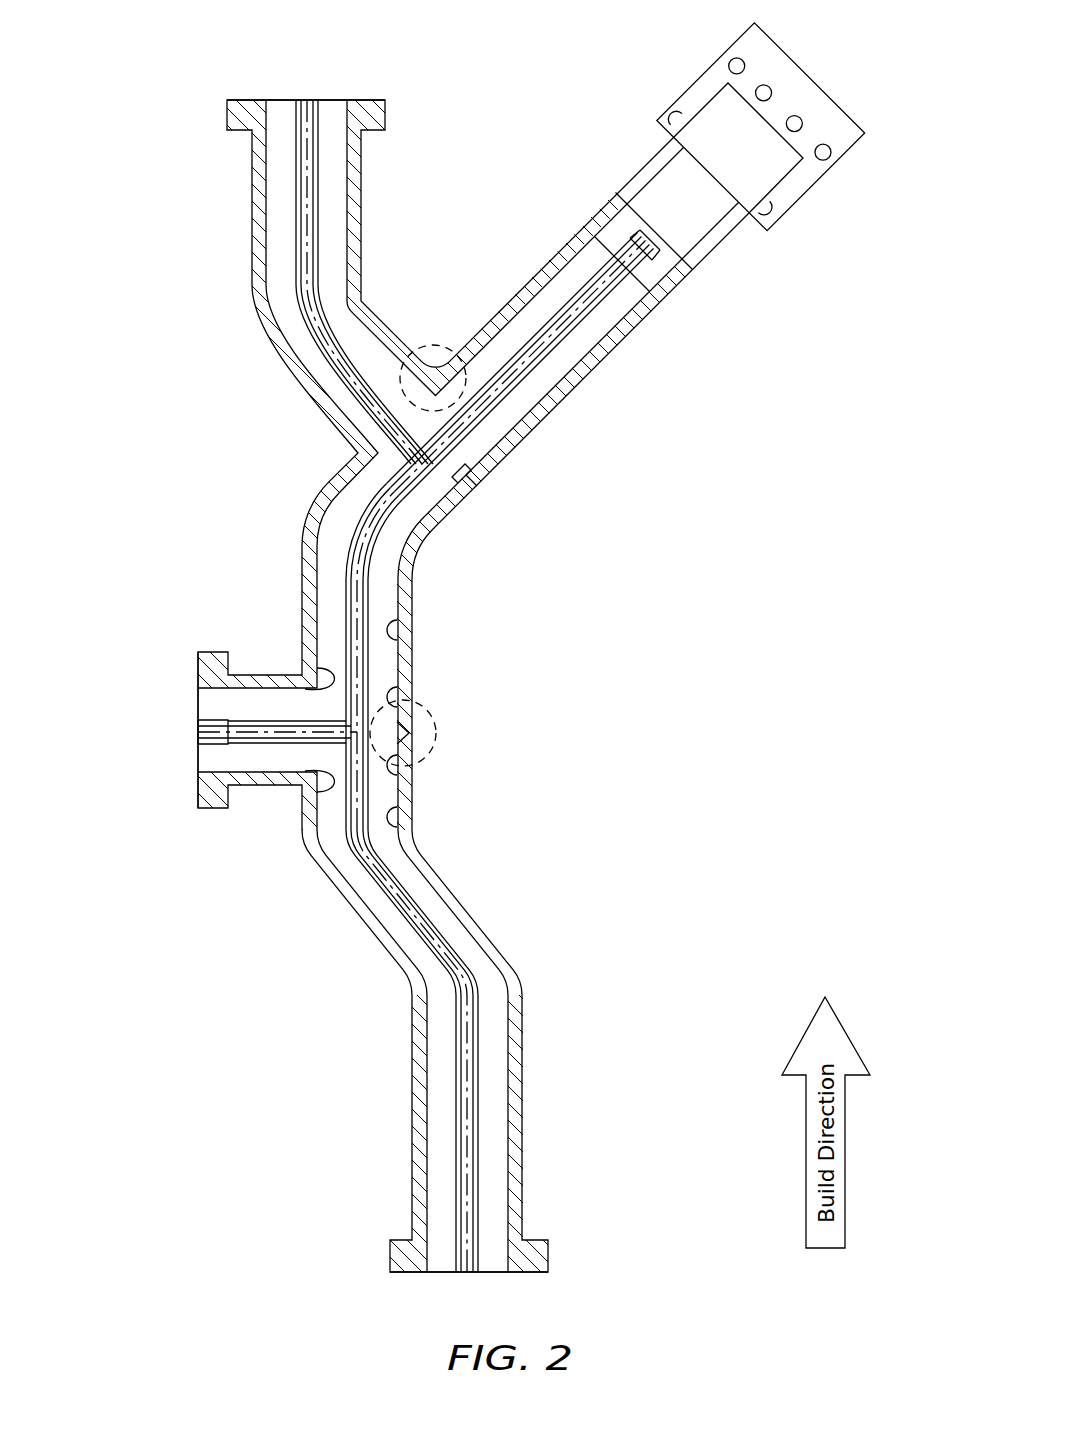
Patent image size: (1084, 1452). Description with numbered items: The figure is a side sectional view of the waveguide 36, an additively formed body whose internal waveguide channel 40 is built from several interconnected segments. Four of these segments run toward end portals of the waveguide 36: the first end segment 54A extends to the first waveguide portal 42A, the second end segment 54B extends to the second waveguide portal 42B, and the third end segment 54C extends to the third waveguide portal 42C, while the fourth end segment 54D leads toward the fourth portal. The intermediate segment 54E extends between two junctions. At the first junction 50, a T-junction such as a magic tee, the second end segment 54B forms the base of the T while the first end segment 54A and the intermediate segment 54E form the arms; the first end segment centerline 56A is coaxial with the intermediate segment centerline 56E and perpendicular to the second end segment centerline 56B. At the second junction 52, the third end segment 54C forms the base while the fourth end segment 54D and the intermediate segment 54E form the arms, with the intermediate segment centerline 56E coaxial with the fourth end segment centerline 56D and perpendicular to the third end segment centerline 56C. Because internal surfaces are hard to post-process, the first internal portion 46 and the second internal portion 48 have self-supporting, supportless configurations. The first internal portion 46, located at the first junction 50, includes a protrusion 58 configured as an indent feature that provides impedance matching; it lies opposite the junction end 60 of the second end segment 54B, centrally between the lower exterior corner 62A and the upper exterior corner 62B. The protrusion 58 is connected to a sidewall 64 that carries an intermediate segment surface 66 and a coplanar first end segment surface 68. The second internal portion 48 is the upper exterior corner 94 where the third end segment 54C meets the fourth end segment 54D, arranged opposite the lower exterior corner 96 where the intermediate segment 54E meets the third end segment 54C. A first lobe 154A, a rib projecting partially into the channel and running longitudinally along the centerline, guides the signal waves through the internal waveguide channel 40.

The waveguide 36 is at (830, 60).
The internal waveguide channel 40 is at (548, 377).
The first waveguide portal 42A is at (490, 1272).
The second waveguide portal 42B is at (198, 710).
The third waveguide portal 42C is at (330, 100).
The first internal portion 46 is at (436, 735).
The second internal portion 48 is at (445, 345).
The first junction 50 is at (450, 691).
The second junction 52 is at (505, 511).
The first end segment 54A is at (442, 895).
The second end segment 54B is at (288, 770).
The third end segment 54C is at (278, 328).
The fourth end segment 54D is at (530, 328).
The intermediate segment 54E is at (335, 603).
The first end segment centerline 56A is at (332, 853).
The second end segment centerline 56B is at (258, 718).
The third end segment centerline 56C is at (328, 392).
The fourth end segment centerline 56D is at (600, 292).
The intermediate segment centerline 56E is at (362, 600).
The protrusion 58 is at (400, 770).
The junction end 60 is at (388, 703).
The lower exterior corner 62A is at (325, 800).
The upper exterior corner 62B is at (330, 680).
The sidewall 64 is at (440, 852).
The intermediate segment surface 66 is at (406, 630).
The first end segment surface 68 is at (400, 812).
The upper exterior corner 94 is at (470, 435).
The lower exterior corner 96 is at (418, 500).
The first lobe 154A is at (355, 430).